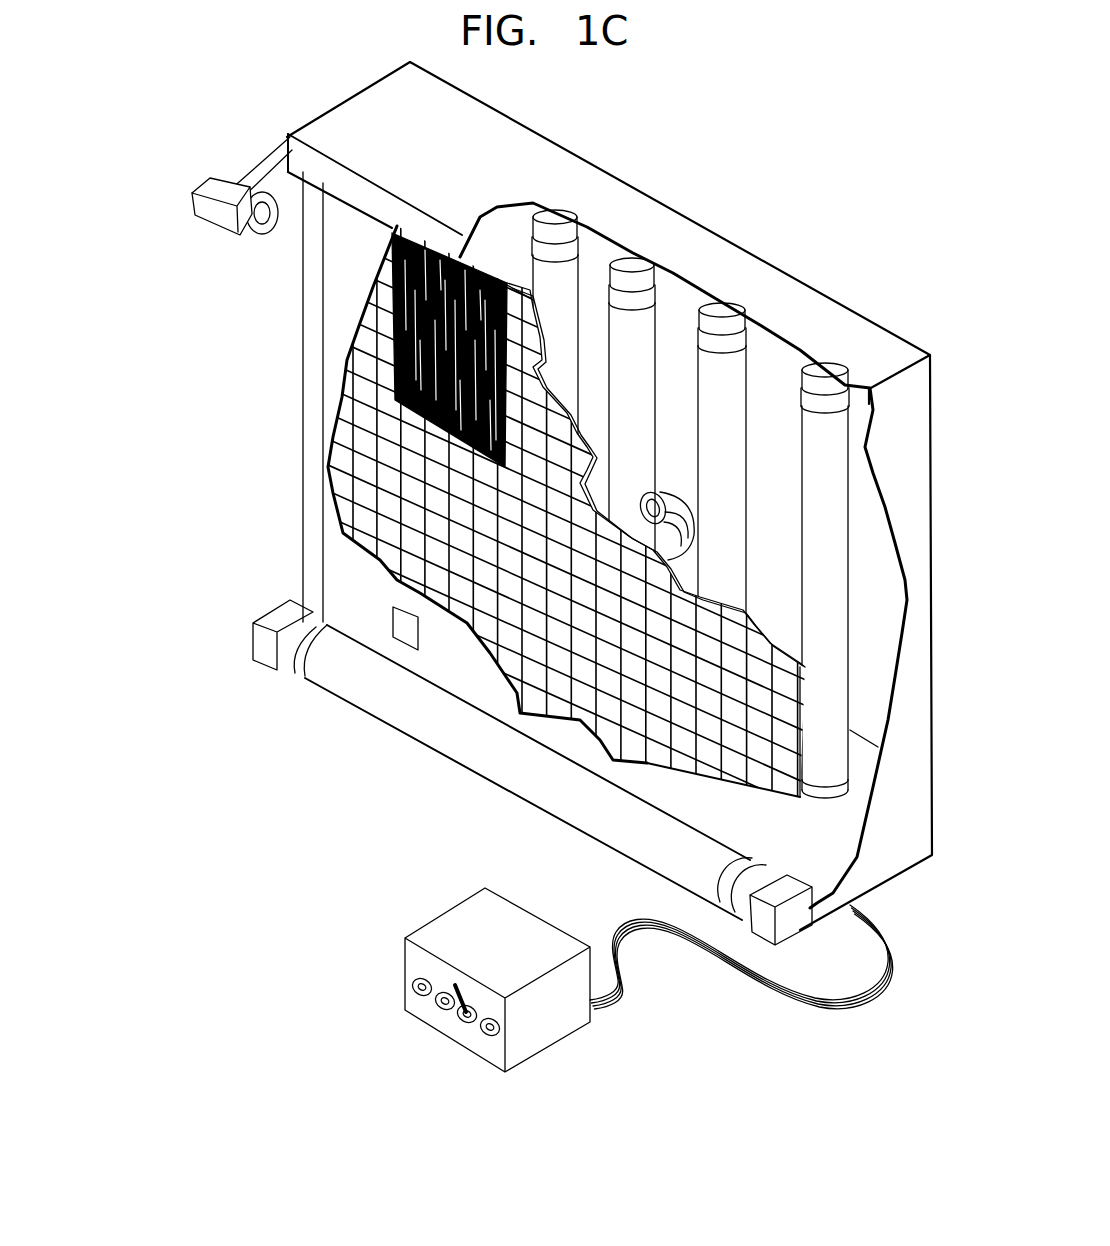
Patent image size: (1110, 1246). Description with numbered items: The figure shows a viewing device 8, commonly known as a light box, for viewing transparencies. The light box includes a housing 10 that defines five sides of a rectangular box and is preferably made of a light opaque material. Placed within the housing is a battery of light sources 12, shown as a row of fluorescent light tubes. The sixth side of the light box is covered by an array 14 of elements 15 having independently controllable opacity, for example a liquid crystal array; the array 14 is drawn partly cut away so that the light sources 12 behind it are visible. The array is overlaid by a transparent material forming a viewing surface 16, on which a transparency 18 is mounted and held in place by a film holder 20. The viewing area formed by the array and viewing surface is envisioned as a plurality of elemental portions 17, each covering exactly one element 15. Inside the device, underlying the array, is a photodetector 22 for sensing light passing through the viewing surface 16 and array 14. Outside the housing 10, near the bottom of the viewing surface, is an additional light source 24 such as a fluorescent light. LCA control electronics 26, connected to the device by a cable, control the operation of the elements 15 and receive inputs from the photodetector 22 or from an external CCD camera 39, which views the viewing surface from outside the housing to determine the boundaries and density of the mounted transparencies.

The viewing device 8 is at (200, 362).
The housing 10 is at (556, 168).
The light sources 12 is at (560, 233).
The array 14 is at (552, 554).
The elements 15 is at (410, 508).
The viewing surface 16 is at (318, 280).
The elemental portion 17 is at (418, 648).
The transparency 18 is at (444, 254).
The film holder 20 is at (432, 250).
The photodetectors 22 is at (660, 473).
The additional light source 24 is at (343, 673).
The LCA control electronics 26 is at (415, 957).
The CCD camera 39 is at (207, 173).